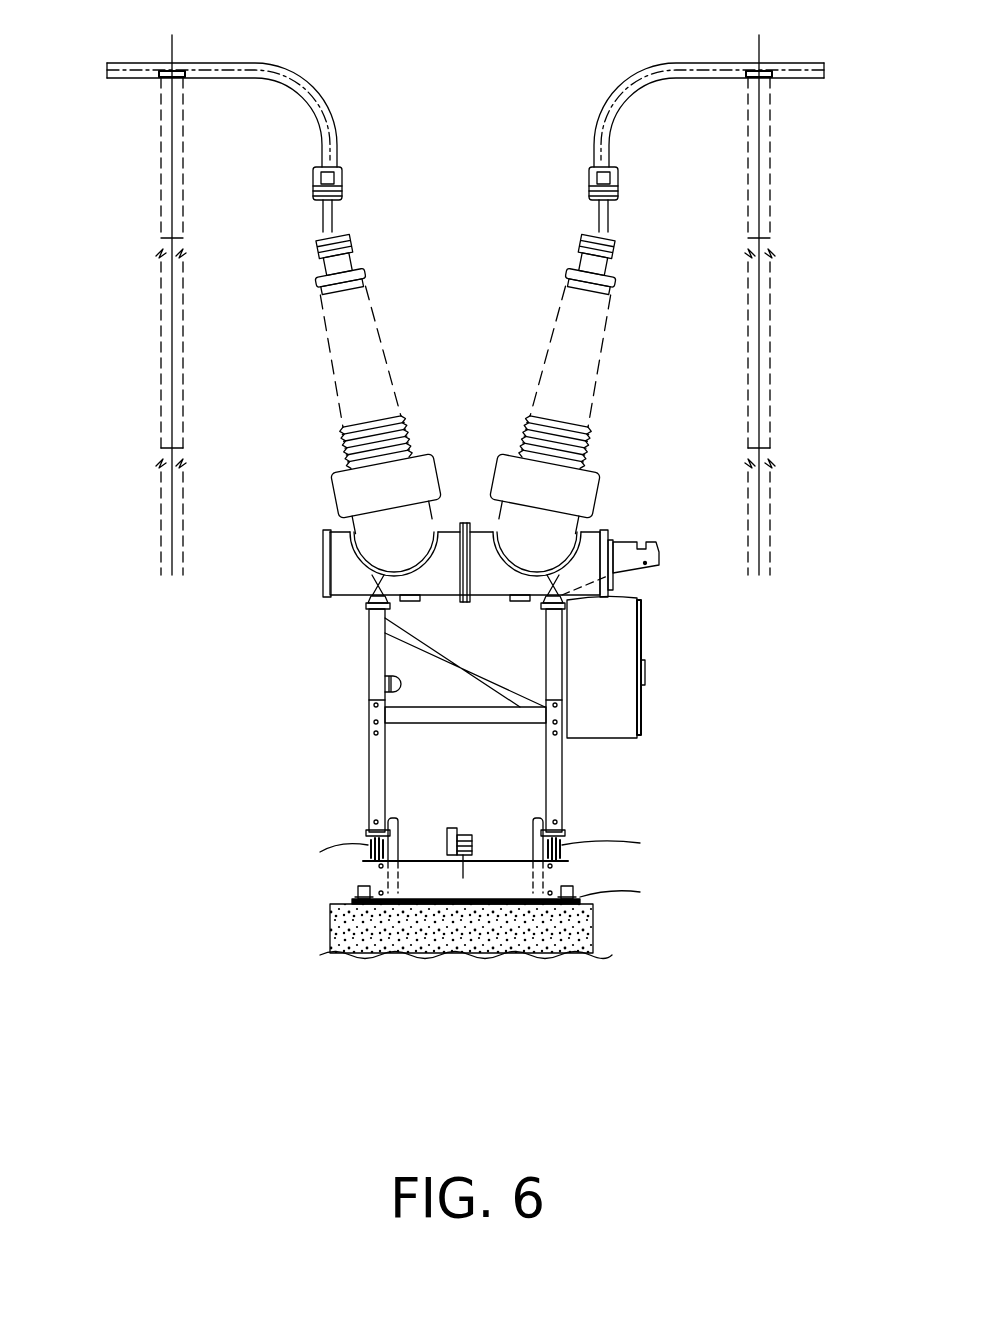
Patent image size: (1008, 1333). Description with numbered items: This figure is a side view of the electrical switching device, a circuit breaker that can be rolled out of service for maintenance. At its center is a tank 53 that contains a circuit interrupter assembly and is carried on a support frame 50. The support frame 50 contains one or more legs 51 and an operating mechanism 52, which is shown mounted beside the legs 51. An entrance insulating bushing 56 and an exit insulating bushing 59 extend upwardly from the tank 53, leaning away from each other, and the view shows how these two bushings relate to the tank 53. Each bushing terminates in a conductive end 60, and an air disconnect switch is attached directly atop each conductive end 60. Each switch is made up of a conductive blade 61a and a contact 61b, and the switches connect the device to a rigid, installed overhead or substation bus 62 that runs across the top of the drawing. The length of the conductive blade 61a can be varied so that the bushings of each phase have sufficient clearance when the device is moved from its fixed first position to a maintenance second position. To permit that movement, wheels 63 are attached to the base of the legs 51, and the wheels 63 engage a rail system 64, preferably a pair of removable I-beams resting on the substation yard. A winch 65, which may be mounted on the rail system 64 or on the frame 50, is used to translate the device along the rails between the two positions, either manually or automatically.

The support frame 50 is at (370, 652).
The legs 51 is at (372, 782).
The operating mechanism 52 is at (622, 648).
The tank 53 is at (603, 531).
The entrance insulating bushing 56 is at (603, 362).
The exit insulating bushing 59 is at (327, 342).
The conductive end 60 is at (312, 232).
The conductive blade 61a is at (341, 215).
The contact 61b is at (343, 185).
The overhead bus 62 is at (142, 62).
The wheels 63 is at (366, 850).
The rail system 64 is at (580, 895).
The winch 65 is at (463, 830).